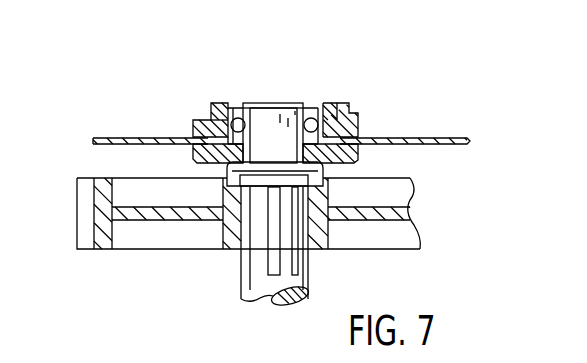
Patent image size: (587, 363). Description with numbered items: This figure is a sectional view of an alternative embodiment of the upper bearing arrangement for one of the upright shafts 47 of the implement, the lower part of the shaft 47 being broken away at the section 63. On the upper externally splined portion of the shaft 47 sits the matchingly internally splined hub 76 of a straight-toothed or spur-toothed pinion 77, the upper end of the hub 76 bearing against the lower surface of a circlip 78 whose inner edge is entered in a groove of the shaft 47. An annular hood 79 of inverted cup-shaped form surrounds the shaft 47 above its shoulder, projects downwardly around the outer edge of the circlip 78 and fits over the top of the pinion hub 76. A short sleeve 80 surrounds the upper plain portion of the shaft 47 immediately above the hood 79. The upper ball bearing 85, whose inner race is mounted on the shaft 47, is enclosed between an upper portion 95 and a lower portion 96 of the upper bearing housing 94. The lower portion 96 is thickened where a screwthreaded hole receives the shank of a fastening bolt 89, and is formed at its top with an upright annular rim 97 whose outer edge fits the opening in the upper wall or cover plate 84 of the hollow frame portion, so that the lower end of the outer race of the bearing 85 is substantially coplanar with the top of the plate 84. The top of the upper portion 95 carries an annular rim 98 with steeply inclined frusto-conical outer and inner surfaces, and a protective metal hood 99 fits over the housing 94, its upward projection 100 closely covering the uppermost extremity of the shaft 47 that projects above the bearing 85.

The shaft 47 is at (340, 264).
The sleeve end / break section 63 is at (250, 288).
The pinion hub 76 is at (325, 189).
The pinion 77 is at (77, 188).
The circlip 78 is at (227, 187).
The annular hood 79 is at (340, 172).
The sleeve 80 is at (245, 149).
The upper wall or cover plate 84 is at (104, 137).
The upper ball bearing 85 is at (330, 105).
The fastening bolt 89 is at (200, 110).
The upper bearing housing 94 is at (375, 122).
The upper portion of upper bearing housing 95 is at (192, 124).
The lower portion of upper bearing housing 96 is at (196, 151).
The annular rim 97 is at (372, 138).
The annular rim 98 is at (305, 104).
The protective metal hood 99 is at (206, 104).
The upward projection 100 is at (250, 104).